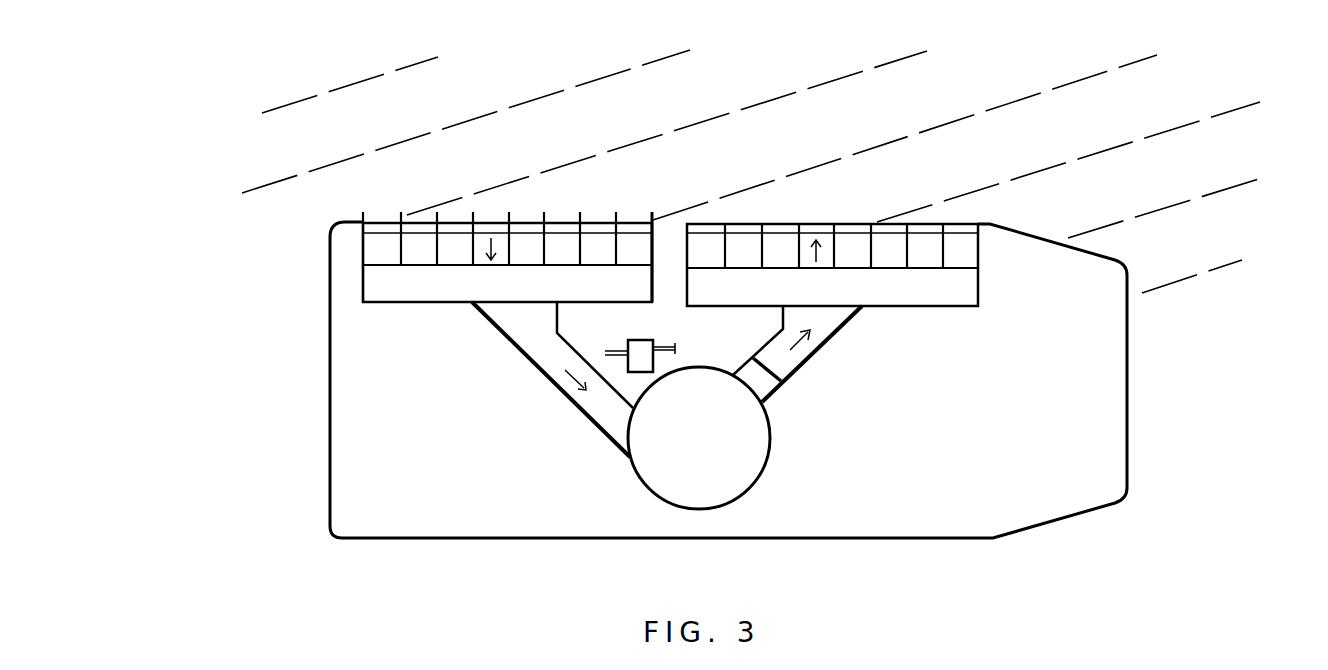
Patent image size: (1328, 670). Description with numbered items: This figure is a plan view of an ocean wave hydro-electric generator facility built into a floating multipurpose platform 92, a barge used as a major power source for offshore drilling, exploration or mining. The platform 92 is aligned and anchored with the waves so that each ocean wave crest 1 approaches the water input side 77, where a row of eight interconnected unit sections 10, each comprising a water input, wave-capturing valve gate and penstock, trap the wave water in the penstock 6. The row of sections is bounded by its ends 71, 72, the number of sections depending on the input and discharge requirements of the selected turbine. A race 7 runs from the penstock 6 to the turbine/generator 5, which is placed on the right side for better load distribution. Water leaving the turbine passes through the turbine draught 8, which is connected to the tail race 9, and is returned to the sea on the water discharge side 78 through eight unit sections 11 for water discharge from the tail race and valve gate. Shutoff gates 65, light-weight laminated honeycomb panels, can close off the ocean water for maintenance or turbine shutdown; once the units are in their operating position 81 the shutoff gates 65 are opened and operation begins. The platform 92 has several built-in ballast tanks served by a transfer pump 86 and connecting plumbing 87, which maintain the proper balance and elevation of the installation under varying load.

The ocean wave crest 1 is at (365, 82).
The turbine/generater 5 is at (772, 467).
The penstock 6 is at (470, 286).
The race 7 is at (596, 407).
The turbine draught 8 is at (763, 384).
The tail race 9 is at (796, 290).
The unit section of the water input, wave capturing valve gate and penstock 10 is at (463, 264).
The unit section of the water discharge from the tail race and valve gate 11 is at (870, 262).
The shutoff gate 65 is at (560, 345).
The end of the unit sections 71 is at (363, 292).
The end of the unit sections 72 is at (982, 292).
The water input side 77 is at (573, 199).
The water discharge side 78 is at (770, 210).
The operating position 81 is at (507, 205).
The transfer pump 86 is at (645, 340).
The connecting plumbing 87 is at (624, 350).
The floating multipurpose platform 92 is at (1128, 400).